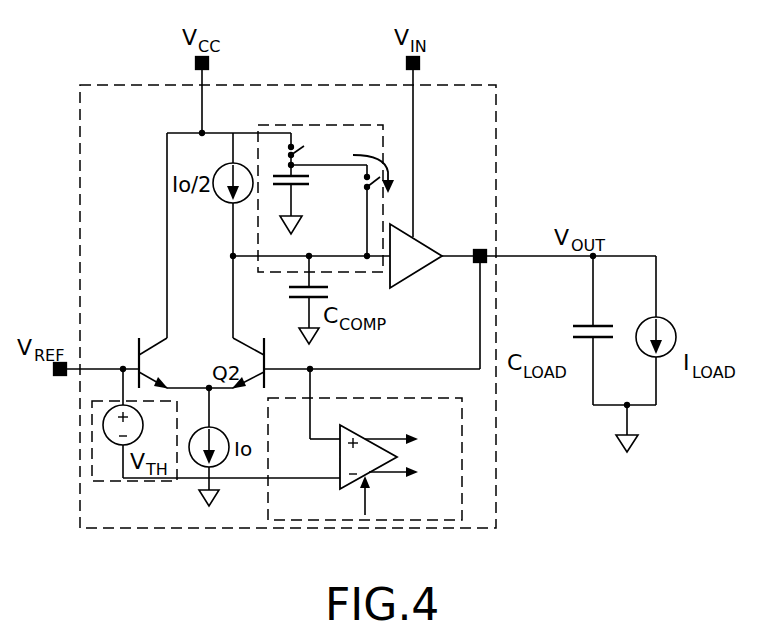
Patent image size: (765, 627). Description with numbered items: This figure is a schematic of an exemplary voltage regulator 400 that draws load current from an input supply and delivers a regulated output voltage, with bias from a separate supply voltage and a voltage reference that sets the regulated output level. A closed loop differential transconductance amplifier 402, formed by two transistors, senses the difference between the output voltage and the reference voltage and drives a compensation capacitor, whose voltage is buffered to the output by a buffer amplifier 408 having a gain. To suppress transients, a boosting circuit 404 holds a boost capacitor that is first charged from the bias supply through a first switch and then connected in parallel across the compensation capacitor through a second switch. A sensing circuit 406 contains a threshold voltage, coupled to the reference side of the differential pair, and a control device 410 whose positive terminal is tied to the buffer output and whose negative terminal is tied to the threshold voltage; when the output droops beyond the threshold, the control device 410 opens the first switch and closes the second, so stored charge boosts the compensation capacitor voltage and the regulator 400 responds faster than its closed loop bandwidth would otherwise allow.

The voltage regulator 400 is at (502, 153).
The amplifier 402 is at (150, 332).
The boosting circuit 404 is at (383, 148).
The sensing circuit 406 is at (462, 483).
The amplifier 408 is at (425, 241).
The control device 410 is at (340, 500).